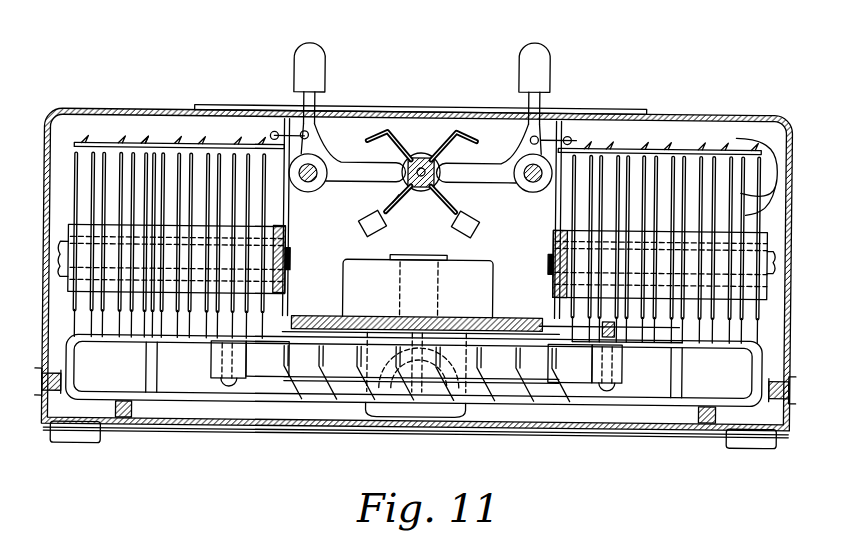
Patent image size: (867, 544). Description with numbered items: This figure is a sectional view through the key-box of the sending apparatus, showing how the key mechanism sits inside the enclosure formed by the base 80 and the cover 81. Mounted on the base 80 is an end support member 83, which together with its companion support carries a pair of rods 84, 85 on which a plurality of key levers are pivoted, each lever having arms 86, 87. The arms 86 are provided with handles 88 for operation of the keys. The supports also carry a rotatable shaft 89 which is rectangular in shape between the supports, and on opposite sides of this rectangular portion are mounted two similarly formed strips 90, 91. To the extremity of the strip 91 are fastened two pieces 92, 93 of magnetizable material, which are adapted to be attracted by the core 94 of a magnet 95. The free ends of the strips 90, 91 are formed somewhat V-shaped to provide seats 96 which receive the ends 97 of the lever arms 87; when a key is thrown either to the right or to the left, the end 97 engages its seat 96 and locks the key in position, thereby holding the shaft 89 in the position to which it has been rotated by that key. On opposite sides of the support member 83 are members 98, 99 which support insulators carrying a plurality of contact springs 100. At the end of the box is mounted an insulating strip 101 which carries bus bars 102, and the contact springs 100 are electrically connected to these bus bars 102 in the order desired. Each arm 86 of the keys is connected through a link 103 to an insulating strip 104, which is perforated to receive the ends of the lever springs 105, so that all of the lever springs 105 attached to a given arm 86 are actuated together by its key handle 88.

The base 80 is at (152, 375).
The cover 81 is at (63, 207).
The end support member 83 is at (490, 132).
The rod 84 is at (308, 185).
The rod 85 is at (531, 186).
The key lever arm 86 is at (318, 101).
The key lever arm 87 is at (356, 178).
The handle 88 is at (337, 89).
The rotatable shaft 89 is at (438, 166).
The strip 90 is at (399, 162).
The strip 91 is at (397, 195).
The piece of magnetizable material 92 is at (382, 228).
The piece of magnetizable material 93 is at (452, 232).
The core 94 is at (450, 256).
The magnet 95 is at (488, 296).
The seat 96 is at (384, 138).
The lever arm end 97 is at (401, 168).
The member 98 is at (553, 242).
The member 99 is at (290, 240).
The springs 100 is at (756, 169).
The insulating strip 101 is at (625, 375).
The bus bar 102 is at (292, 385).
The link 103 is at (302, 138).
The insulating strip 104 is at (205, 146).
The lever spring 105 is at (142, 146).